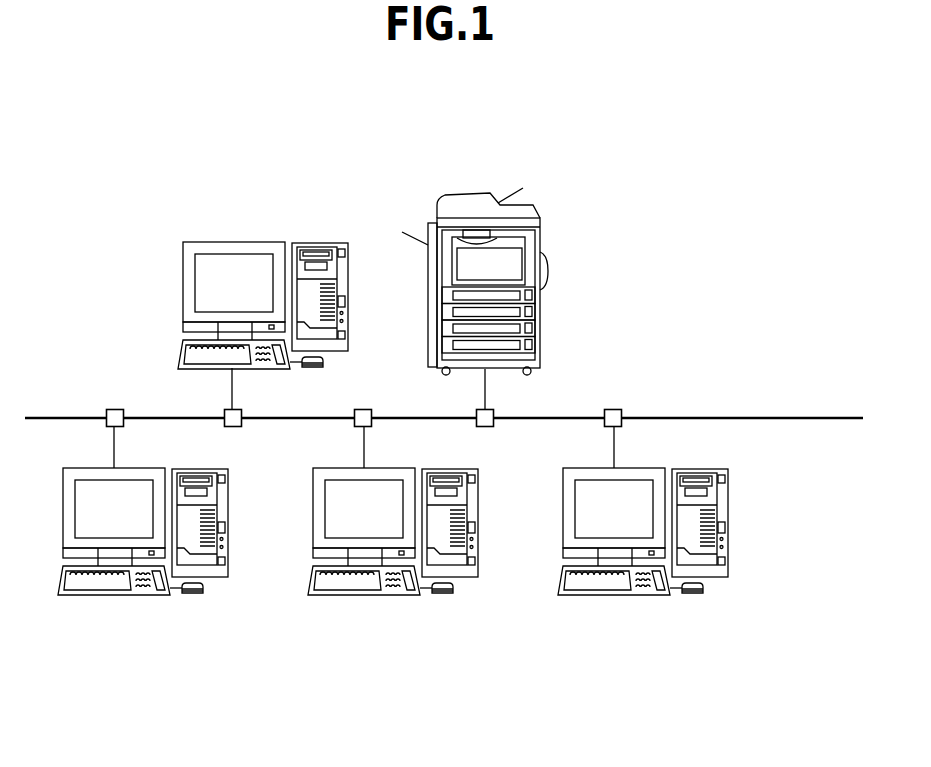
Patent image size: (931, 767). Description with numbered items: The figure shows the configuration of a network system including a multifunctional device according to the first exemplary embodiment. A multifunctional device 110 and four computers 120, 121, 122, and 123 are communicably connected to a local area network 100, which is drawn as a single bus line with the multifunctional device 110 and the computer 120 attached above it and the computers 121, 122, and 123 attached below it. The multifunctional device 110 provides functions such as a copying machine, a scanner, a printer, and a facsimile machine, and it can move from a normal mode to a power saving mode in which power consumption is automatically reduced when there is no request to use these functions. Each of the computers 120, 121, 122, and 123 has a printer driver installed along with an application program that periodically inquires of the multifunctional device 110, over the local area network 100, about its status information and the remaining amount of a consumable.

The local area network 100 is at (668, 417).
The multifunctional device 110 is at (482, 192).
The computer 120 is at (228, 241).
The computer 121 is at (100, 597).
The computer 122 is at (350, 597).
The computer 123 is at (600, 597).